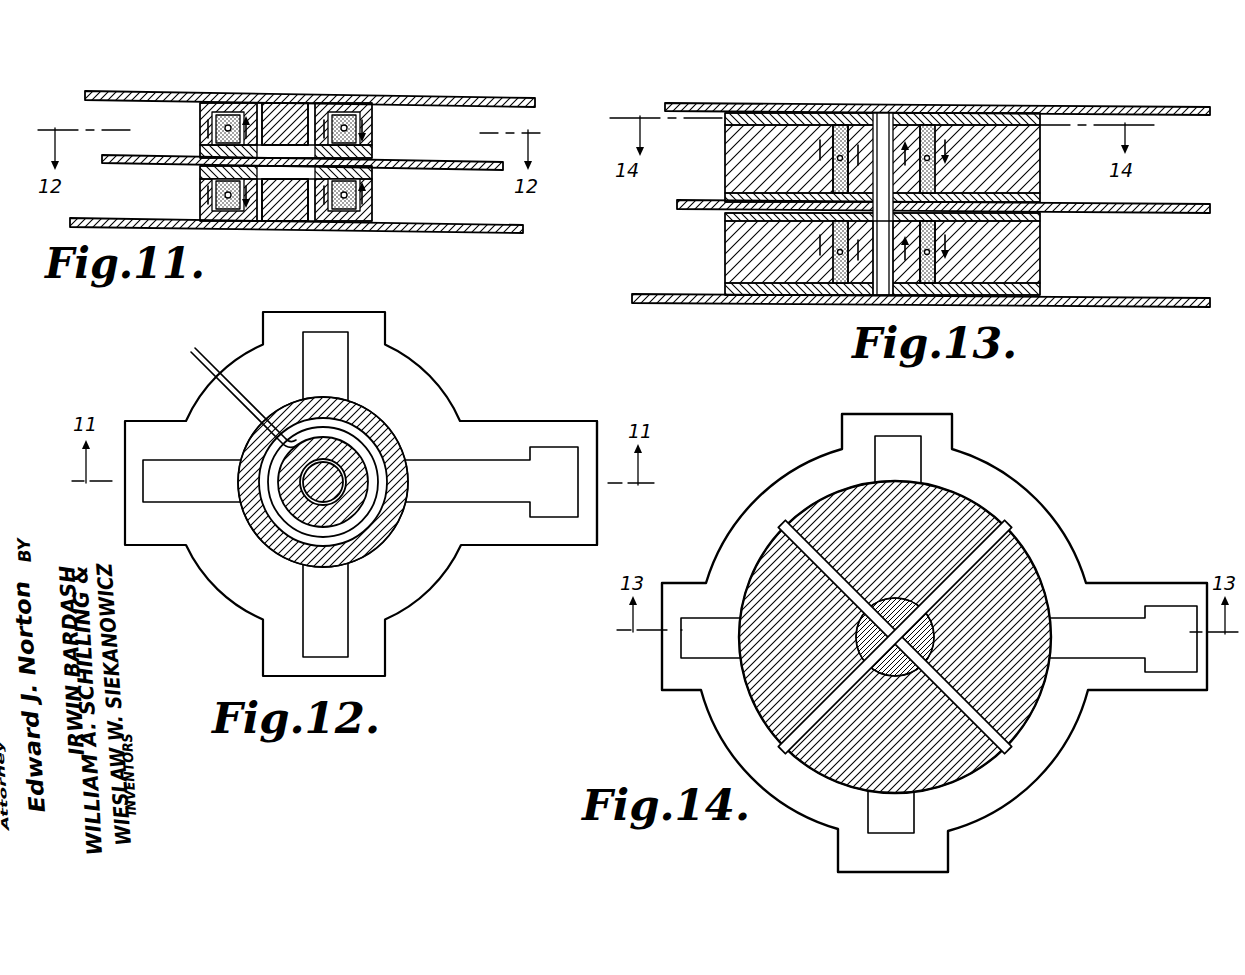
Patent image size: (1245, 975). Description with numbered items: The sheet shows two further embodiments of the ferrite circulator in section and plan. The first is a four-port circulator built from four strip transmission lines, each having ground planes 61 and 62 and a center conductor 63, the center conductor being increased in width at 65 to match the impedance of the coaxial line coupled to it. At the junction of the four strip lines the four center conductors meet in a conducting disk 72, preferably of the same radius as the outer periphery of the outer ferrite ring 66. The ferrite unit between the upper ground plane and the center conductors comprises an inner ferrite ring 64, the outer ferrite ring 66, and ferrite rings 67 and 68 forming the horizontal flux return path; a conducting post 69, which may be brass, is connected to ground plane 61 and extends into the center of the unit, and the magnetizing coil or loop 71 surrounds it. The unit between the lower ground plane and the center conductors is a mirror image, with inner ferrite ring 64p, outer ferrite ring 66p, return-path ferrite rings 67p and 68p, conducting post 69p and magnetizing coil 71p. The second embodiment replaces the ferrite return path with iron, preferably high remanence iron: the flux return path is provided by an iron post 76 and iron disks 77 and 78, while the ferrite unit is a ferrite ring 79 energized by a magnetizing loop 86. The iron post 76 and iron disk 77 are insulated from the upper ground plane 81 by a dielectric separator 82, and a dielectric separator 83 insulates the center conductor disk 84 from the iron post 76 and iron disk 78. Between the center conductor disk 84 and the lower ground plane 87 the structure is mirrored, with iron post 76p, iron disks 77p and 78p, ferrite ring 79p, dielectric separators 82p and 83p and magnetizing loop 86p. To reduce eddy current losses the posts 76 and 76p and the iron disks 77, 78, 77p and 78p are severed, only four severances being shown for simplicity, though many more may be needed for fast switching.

In FIG. 11, the ground plane 61 is at (494, 99).
In FIG. 11, the ground plane 62 is at (429, 235).
In FIG. 12, the ground plane 62 is at (534, 429).
In FIG. 12, the center conductor 63 is at (462, 463).
In FIG. 11, the inner ferrite ring 64 is at (268, 118).
In FIG. 12, the inner ferrite ring 64 is at (348, 451).
In FIG. 11, the inner ferrite ring 64p is at (265, 222).
In FIG. 12, the widened center conductor portion 65 is at (554, 508).
In FIG. 11, the outer ferrite ring 66 is at (200, 124).
In FIG. 12, the outer ferrite ring 66 is at (370, 419).
In FIG. 11, the outer ferrite ring 66p is at (375, 198).
In FIG. 11, the ferrite ring 67 is at (212, 103).
In FIG. 11, the ferrite ring 67p is at (368, 208).
In FIG. 11, the ferrite ring 68 is at (206, 151).
In FIG. 11, the ferrite ring 68p is at (372, 178).
In FIG. 11, the conducting post 69 is at (300, 106).
In FIG. 12, the conducting post 69 is at (333, 491).
In FIG. 11, the conducting post 69p is at (292, 222).
In FIG. 11, the magnetizing coil 71 is at (366, 129).
In FIG. 12, the magnetizing coil 71 is at (358, 528).
In FIG. 11, the magnetizing coil 71p is at (345, 222).
In FIG. 11, the conducting disk 72 is at (374, 161).
In FIG. 13, the iron post 76 is at (882, 125).
In FIG. 14, the iron post 76 is at (932, 674).
In FIG. 13, the iron post 76p is at (880, 297).
In FIG. 13, the iron disk 77 is at (740, 118).
In FIG. 14, the iron disk 77 is at (1000, 516).
In FIG. 13, the iron disk 77p is at (725, 289).
In FIG. 13, the iron disk 78 is at (725, 189).
In FIG. 13, the iron disk 78p is at (725, 226).
In FIG. 13, the ferrite ring 79 is at (1012, 176).
In FIG. 13, the ferrite ring 79p is at (745, 244).
In FIG. 13, the upper ground plane 81 is at (784, 104).
In FIG. 13, the dielectric separator 82 is at (841, 124).
In FIG. 13, the dielectric separator 82p is at (1040, 297).
In FIG. 13, the dielectric separator 83 is at (725, 197).
In FIG. 13, the dielectric separator 83p is at (725, 217).
In FIG. 13, the center conductor disk 84 is at (1040, 211).
In FIG. 13, the magnetizing loop 86 is at (840, 155).
In FIG. 13, the magnetizing loop 86p is at (830, 293).
In FIG. 13, the lower ground plane 87 is at (735, 306).
In FIG. 14, the lower ground plane 87 is at (1070, 557).